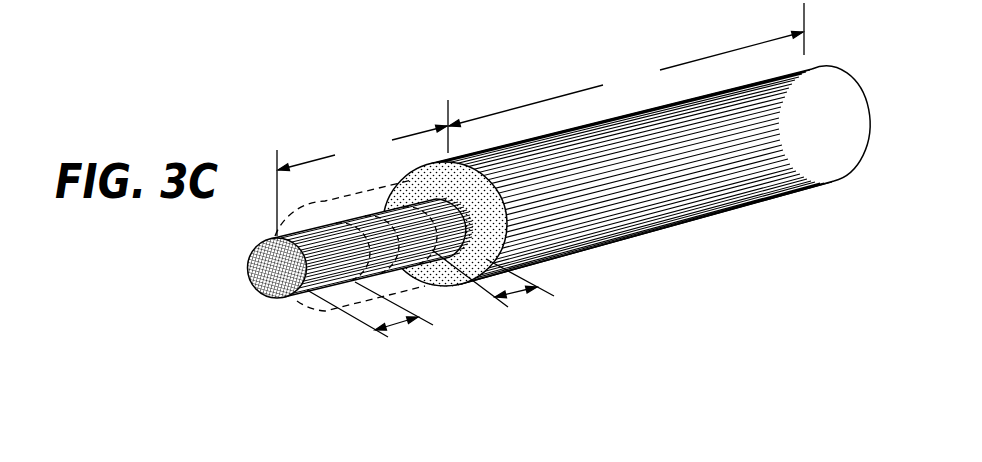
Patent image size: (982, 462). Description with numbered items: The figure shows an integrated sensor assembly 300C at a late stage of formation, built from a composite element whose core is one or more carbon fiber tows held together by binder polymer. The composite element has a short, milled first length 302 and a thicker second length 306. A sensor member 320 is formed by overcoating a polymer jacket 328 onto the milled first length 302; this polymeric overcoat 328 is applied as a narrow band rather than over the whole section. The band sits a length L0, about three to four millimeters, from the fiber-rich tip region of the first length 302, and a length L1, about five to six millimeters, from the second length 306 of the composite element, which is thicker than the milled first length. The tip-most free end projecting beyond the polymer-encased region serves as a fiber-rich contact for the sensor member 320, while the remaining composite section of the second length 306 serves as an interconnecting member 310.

The integrated sensor assembly 300C is at (477, 52).
The first length 302 is at (362, 168).
The second length 306 is at (626, 65).
The interconnecting member 310 is at (693, 241).
The sensor member 320 is at (479, 326).
The polymer jacket 328 is at (318, 310).
The length from fiber-rich tip region L0 is at (400, 325).
The length from second length L1 is at (517, 295).